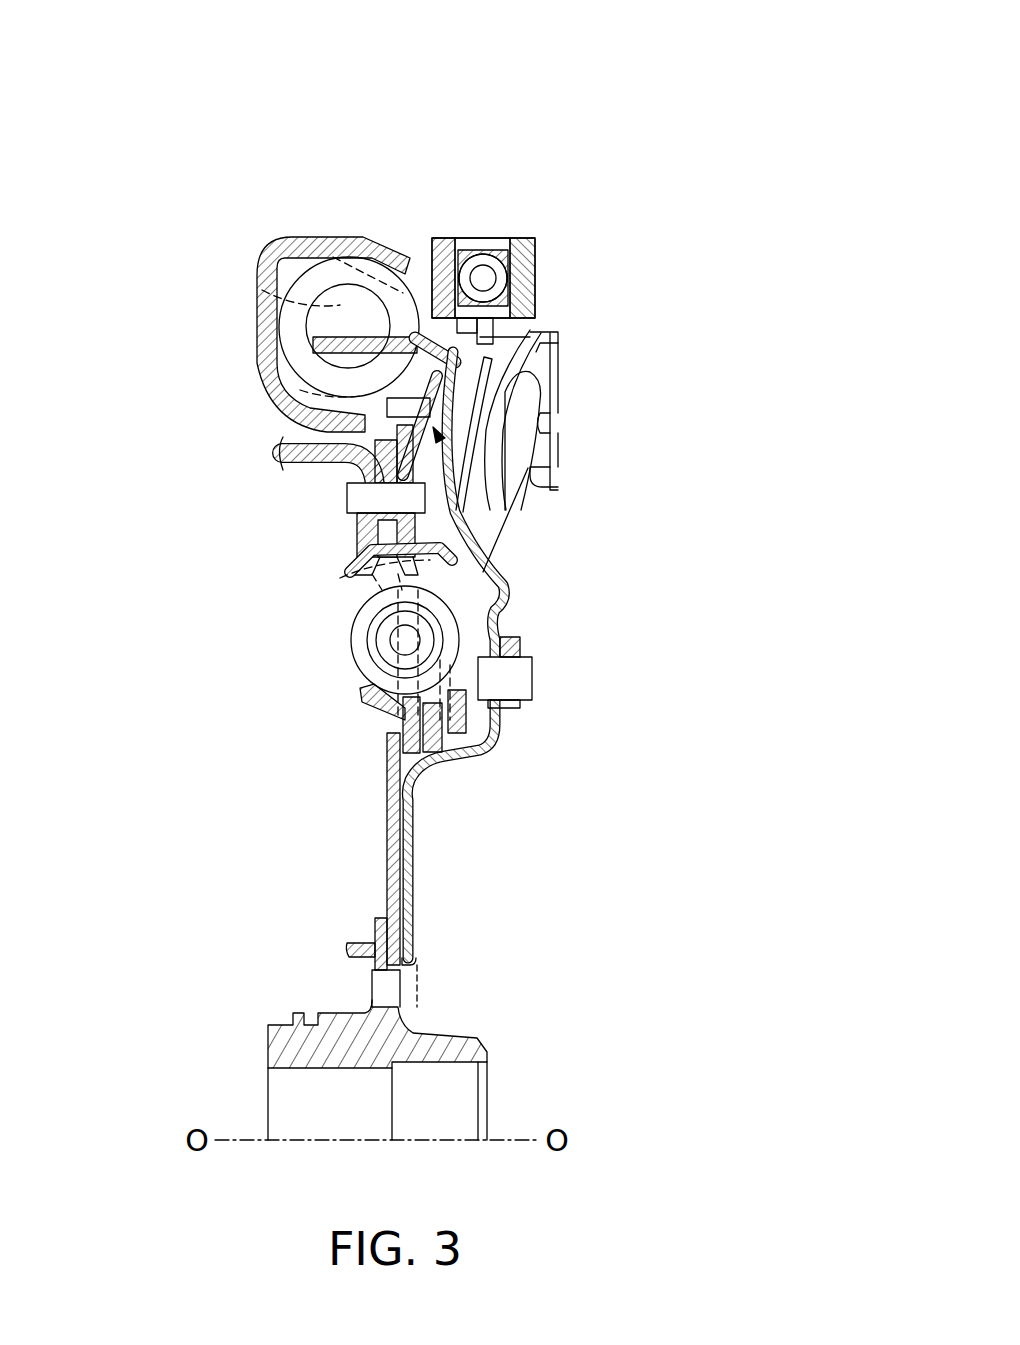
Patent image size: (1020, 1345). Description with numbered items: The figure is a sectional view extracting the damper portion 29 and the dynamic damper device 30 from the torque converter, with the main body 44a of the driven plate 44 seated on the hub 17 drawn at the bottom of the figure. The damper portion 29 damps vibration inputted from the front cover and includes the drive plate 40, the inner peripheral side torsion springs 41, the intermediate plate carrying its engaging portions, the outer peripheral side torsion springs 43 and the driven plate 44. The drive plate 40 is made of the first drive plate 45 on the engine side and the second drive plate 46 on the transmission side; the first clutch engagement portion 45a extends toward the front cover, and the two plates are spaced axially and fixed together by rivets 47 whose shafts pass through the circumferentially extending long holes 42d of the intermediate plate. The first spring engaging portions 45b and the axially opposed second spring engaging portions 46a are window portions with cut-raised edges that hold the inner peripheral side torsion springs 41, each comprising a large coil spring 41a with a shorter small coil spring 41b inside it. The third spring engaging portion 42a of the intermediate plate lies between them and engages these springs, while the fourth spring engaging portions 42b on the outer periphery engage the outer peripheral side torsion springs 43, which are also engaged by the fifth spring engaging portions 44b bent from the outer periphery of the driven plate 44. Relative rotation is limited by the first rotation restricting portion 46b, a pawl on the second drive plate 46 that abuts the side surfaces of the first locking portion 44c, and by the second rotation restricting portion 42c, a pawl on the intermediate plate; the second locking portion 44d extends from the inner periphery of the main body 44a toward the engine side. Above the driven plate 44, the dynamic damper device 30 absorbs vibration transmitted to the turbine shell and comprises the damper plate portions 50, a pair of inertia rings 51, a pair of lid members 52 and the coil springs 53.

The hub 17 is at (440, 1075).
The damper portion 29 is at (308, 155).
The dynamic damper device 30 is at (577, 127).
The drive plate 40 is at (146, 532).
The inner peripheral side torsion springs 41 is at (640, 645).
The large coil spring 41a is at (520, 637).
The small coil spring 41b is at (508, 722).
The third spring engaging portion 42a is at (350, 660).
The fourth spring engaging portions 42b is at (388, 235).
The second rotation restricting portion 42c is at (312, 338).
The long holes 42d is at (337, 443).
The outer peripheral side torsion springs 43 is at (317, 283).
The driven plate 44 is at (735, 286).
The main body 44a is at (505, 410).
The fifth spring engaging portions 44b is at (540, 340).
The first locking portion 44c is at (550, 422).
The second locking portion 44d is at (520, 380).
The first drive plate 45 is at (350, 527).
The first clutch engagement portion 45a is at (283, 462).
The first spring engaging portions 45b is at (350, 628).
The second drive plate 46 is at (350, 590).
The second spring engaging portions 46a is at (505, 594).
The first rotation restricting portion 46b is at (548, 474).
The rivets 47 is at (463, 505).
The damper plate portions 50 is at (490, 238).
The inertia rings 51 is at (470, 240).
The lid members 52 is at (445, 240).
The coil springs 53 is at (535, 262).